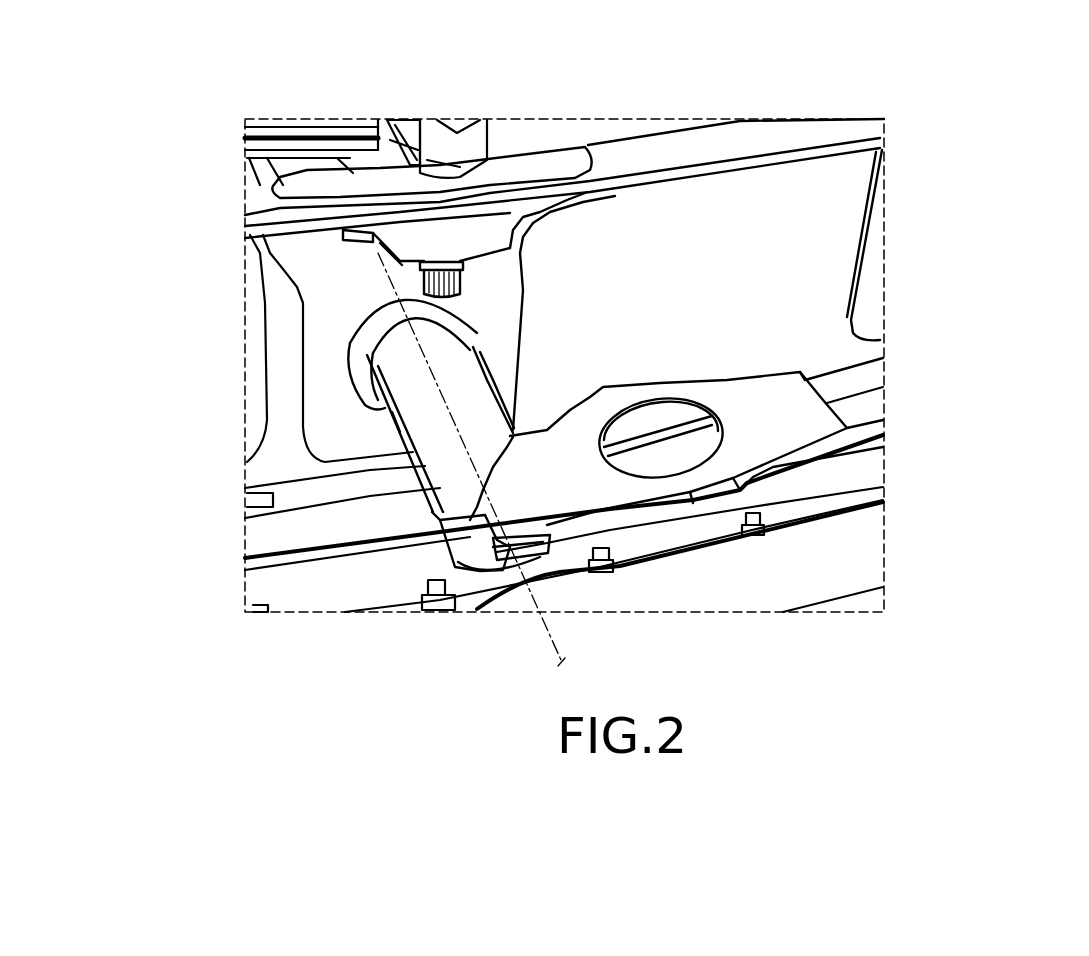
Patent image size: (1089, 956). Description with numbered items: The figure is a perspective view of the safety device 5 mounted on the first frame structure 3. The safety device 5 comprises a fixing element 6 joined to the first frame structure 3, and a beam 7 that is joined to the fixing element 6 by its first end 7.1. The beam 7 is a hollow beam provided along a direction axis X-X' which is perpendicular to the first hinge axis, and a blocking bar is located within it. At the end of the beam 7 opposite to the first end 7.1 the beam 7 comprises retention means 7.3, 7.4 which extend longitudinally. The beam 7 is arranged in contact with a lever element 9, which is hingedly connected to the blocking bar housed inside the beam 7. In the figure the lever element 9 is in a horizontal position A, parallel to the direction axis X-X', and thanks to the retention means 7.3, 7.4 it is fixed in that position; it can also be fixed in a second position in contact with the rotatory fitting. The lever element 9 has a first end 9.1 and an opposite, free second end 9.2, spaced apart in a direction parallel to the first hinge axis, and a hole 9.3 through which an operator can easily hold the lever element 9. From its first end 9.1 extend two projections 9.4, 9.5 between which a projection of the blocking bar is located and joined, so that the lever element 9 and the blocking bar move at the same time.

The first frame structure 3 is at (677, 202).
The safety device 5 is at (935, 128).
The fixing element 6 is at (500, 267).
The beam 7 is at (452, 357).
The first end 7.1 is at (370, 337).
The retention means 7.3 is at (467, 487).
The retention means 7.4 is at (480, 572).
The lever element 9 is at (777, 387).
The first end 9.1 is at (595, 565).
The second end 9.2 is at (845, 452).
The hole 9.3 is at (647, 420).
The projection 9.4 is at (520, 520).
The projection 9.5 is at (530, 575).